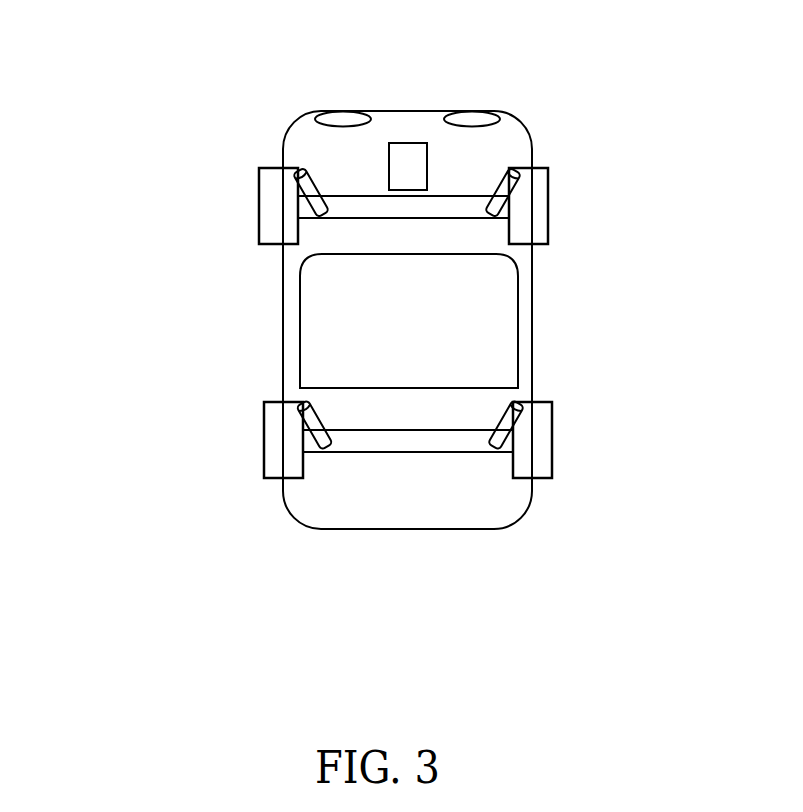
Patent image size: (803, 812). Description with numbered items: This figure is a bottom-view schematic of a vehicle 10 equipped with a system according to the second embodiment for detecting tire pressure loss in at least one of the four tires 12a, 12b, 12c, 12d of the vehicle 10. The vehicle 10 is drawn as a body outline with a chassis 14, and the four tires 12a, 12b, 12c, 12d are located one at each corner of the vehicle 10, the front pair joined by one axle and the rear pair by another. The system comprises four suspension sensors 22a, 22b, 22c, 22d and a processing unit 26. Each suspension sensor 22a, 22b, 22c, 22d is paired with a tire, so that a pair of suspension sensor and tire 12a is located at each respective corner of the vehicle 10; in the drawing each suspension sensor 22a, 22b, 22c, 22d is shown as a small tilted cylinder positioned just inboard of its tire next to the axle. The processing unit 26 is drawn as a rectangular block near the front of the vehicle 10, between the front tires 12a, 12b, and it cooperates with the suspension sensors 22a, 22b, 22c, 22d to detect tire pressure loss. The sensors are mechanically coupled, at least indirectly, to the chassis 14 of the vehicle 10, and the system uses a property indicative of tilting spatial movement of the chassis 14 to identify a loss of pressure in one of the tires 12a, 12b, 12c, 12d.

The vehicle 10 is at (385, 305).
The tire 12a is at (246, 226).
The tire 12b is at (582, 205).
The tire 12c is at (250, 438).
The tire 12d is at (565, 438).
The chassis 14 is at (419, 513).
The suspension sensor 22a is at (321, 185).
The suspension sensor 22b is at (493, 188).
The suspension sensor 22c is at (334, 431).
The suspension sensor 22d is at (484, 431).
The processing unit 26 is at (411, 140).